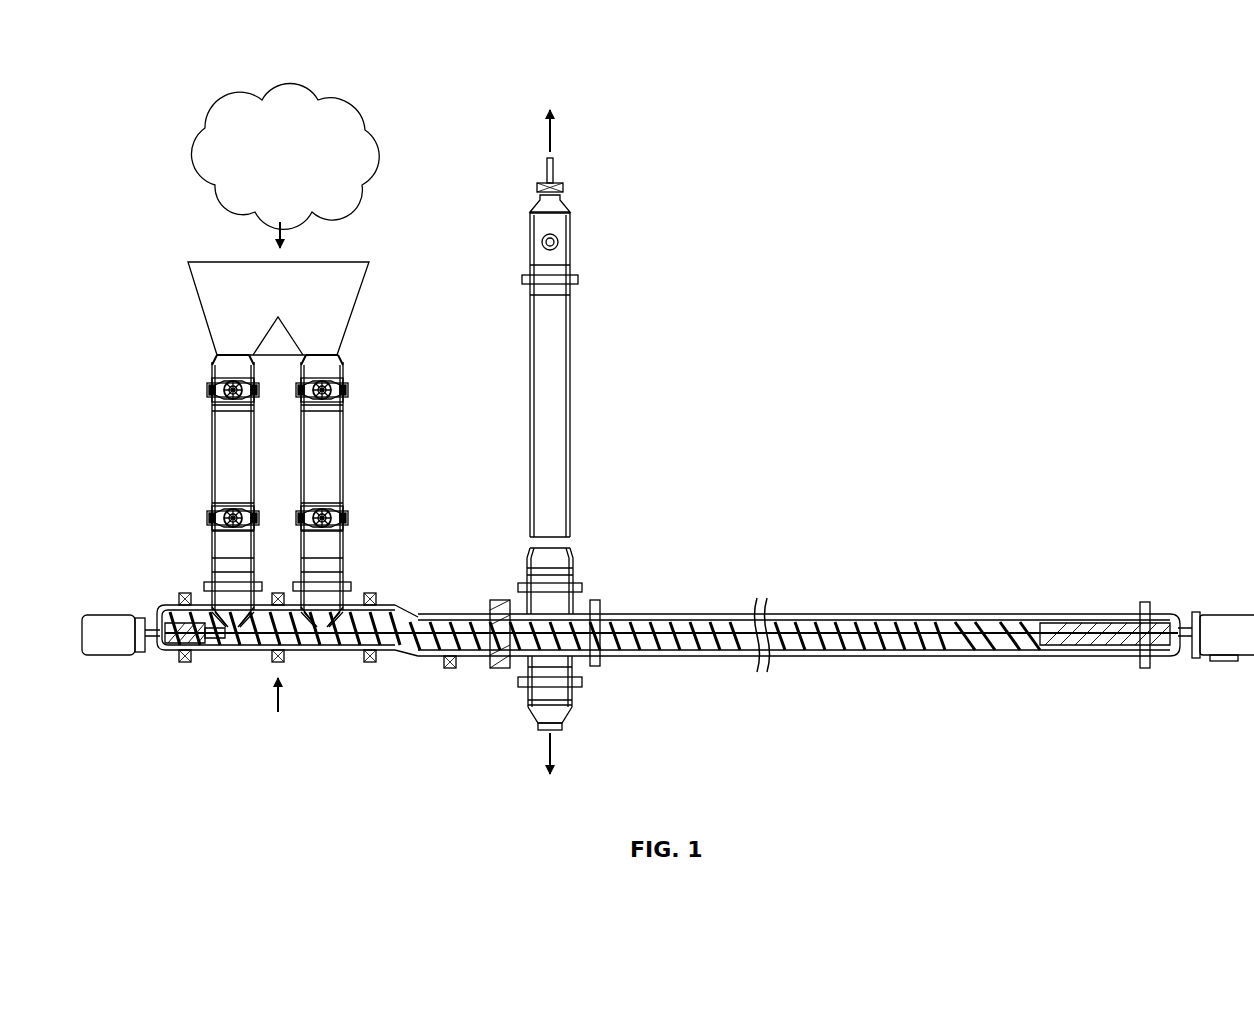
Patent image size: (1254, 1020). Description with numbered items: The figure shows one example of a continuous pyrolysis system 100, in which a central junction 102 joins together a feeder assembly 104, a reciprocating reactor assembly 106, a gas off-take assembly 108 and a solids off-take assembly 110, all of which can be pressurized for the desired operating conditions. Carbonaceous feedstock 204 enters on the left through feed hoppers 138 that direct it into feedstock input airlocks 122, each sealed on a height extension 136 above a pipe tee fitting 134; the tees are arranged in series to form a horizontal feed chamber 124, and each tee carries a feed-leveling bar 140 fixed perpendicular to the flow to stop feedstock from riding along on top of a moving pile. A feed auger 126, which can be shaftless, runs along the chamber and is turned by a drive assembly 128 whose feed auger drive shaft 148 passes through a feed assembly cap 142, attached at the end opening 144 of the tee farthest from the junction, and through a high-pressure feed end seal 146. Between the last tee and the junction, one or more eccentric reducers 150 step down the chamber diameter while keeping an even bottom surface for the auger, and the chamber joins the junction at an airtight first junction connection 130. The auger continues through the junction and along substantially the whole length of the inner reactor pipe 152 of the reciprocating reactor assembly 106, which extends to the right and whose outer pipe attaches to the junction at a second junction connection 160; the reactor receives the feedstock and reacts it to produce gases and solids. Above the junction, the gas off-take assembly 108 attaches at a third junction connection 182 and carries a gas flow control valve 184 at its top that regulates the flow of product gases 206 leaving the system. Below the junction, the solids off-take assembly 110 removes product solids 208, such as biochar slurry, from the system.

The continuous pyrolysis system 100 is at (908, 168).
The junction 102 is at (590, 586).
The feeder assembly 104 is at (422, 606).
The reciprocating reactor assembly 106 is at (937, 606).
The gas off-take assembly 108 is at (590, 294).
The solids off-take assembly 110 is at (524, 714).
The feedstock input airlock 122 is at (213, 423).
The feed chamber 124 is at (282, 695).
The feed auger 126 is at (215, 650).
The drive assembly 128 is at (112, 656).
The first junction connection 130 is at (495, 600).
The pipe tee fitting 134 is at (245, 656).
The height extension 136 is at (215, 541).
The feed hopper 138 is at (358, 298).
The feed-leveling bar 140 is at (217, 603).
The feed assembly cap 142 is at (160, 612).
The end opening 144 is at (192, 652).
The high-pressure feed end seal 146 is at (172, 656).
The feed auger drive shaft 148 is at (152, 656).
The eccentric reducer 150 is at (400, 656).
The inner reactor pipe 152 is at (708, 612).
The second junction connection 160 is at (598, 600).
The third junction connection 182 is at (528, 590).
The gas flow control valve 184 is at (537, 187).
The carbonaceous feedstock 204 is at (283, 88).
The product gases 206 is at (554, 133).
The product solids 208 is at (556, 755).